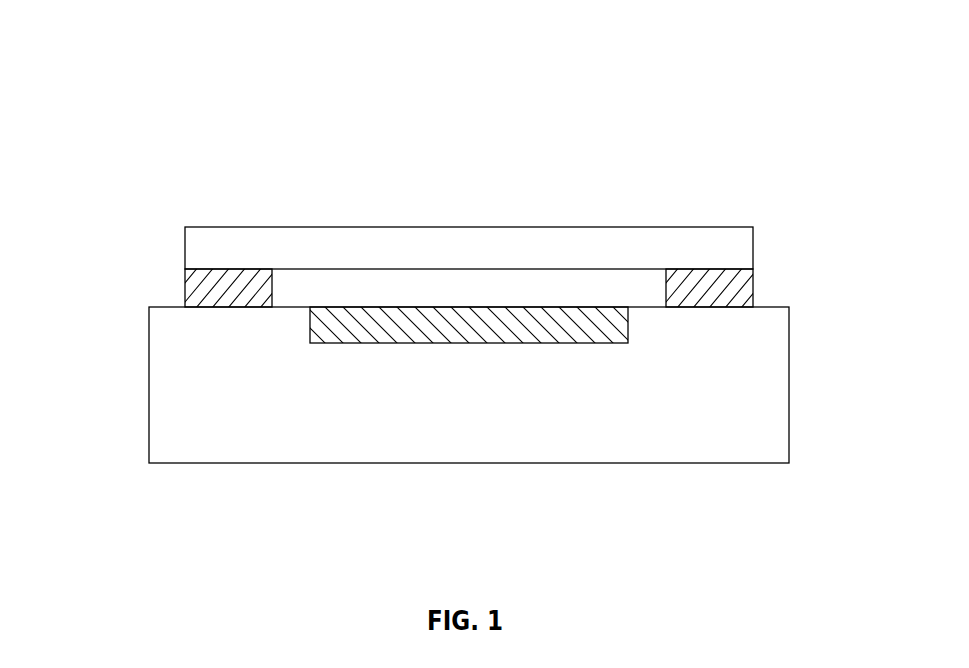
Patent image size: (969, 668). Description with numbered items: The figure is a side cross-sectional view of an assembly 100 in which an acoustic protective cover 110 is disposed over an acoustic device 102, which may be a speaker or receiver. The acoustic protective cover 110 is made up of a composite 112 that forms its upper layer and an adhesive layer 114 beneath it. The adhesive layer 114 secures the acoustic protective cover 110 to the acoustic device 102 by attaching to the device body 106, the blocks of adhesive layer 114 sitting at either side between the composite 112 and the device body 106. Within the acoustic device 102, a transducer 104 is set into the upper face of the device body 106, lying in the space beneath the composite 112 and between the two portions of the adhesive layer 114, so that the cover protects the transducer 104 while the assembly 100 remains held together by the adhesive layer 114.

The assembly 100 is at (116, 66).
The acoustic device 102 is at (810, 380).
The transducer 104 is at (466, 339).
The device body 106 is at (682, 450).
The acoustic protective cover 110 is at (174, 246).
The composite 112 is at (320, 240).
The adhesive layer 114 is at (193, 291).